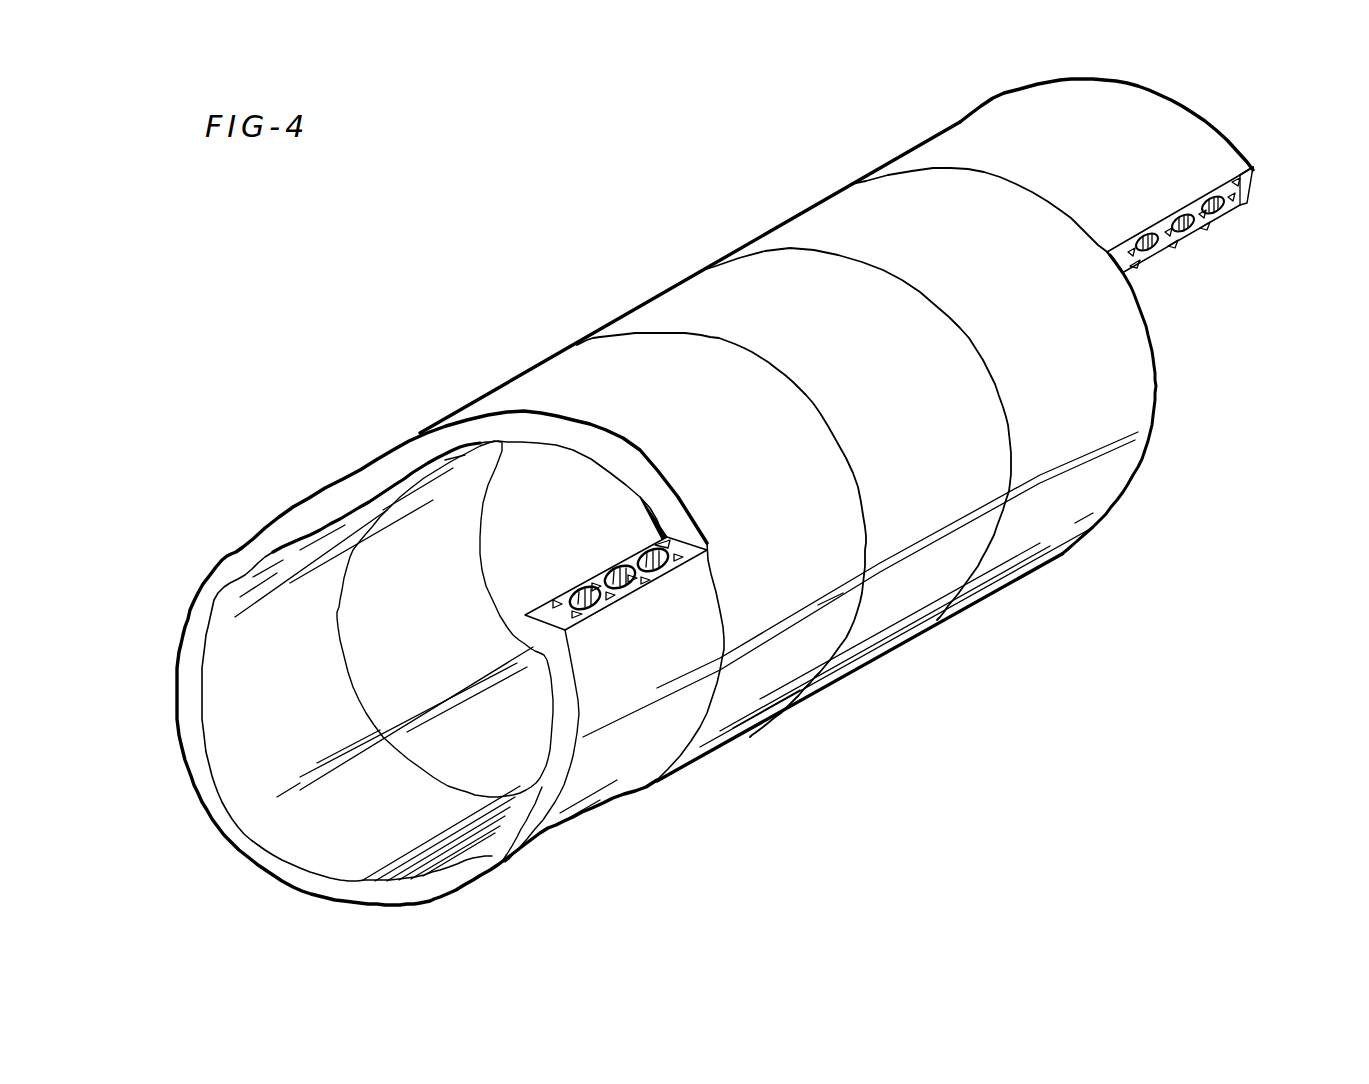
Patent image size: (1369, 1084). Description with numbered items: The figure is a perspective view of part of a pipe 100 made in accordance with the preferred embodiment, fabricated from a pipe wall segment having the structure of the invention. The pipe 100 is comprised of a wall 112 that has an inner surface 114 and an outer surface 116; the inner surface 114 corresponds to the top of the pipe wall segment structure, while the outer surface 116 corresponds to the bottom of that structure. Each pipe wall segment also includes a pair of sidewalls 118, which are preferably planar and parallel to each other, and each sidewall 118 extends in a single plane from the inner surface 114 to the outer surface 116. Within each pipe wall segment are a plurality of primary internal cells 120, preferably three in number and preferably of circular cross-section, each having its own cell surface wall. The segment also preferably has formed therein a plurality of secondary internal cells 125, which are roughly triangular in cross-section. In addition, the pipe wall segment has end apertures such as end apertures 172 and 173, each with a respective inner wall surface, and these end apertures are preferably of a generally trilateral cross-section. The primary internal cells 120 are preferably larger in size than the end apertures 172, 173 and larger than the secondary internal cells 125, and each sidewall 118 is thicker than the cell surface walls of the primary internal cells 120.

The pipe 100 is at (695, 501).
The wall 112 is at (714, 248).
The inner surface 114 is at (250, 767).
The outer surface 116 is at (543, 387).
The sidewall 118 is at (716, 480).
The primary internal cell 120 is at (597, 574).
The secondary internal cell 125 is at (1225, 234).
The end aperture 172 is at (1240, 175).
The end aperture 173 is at (1243, 205).